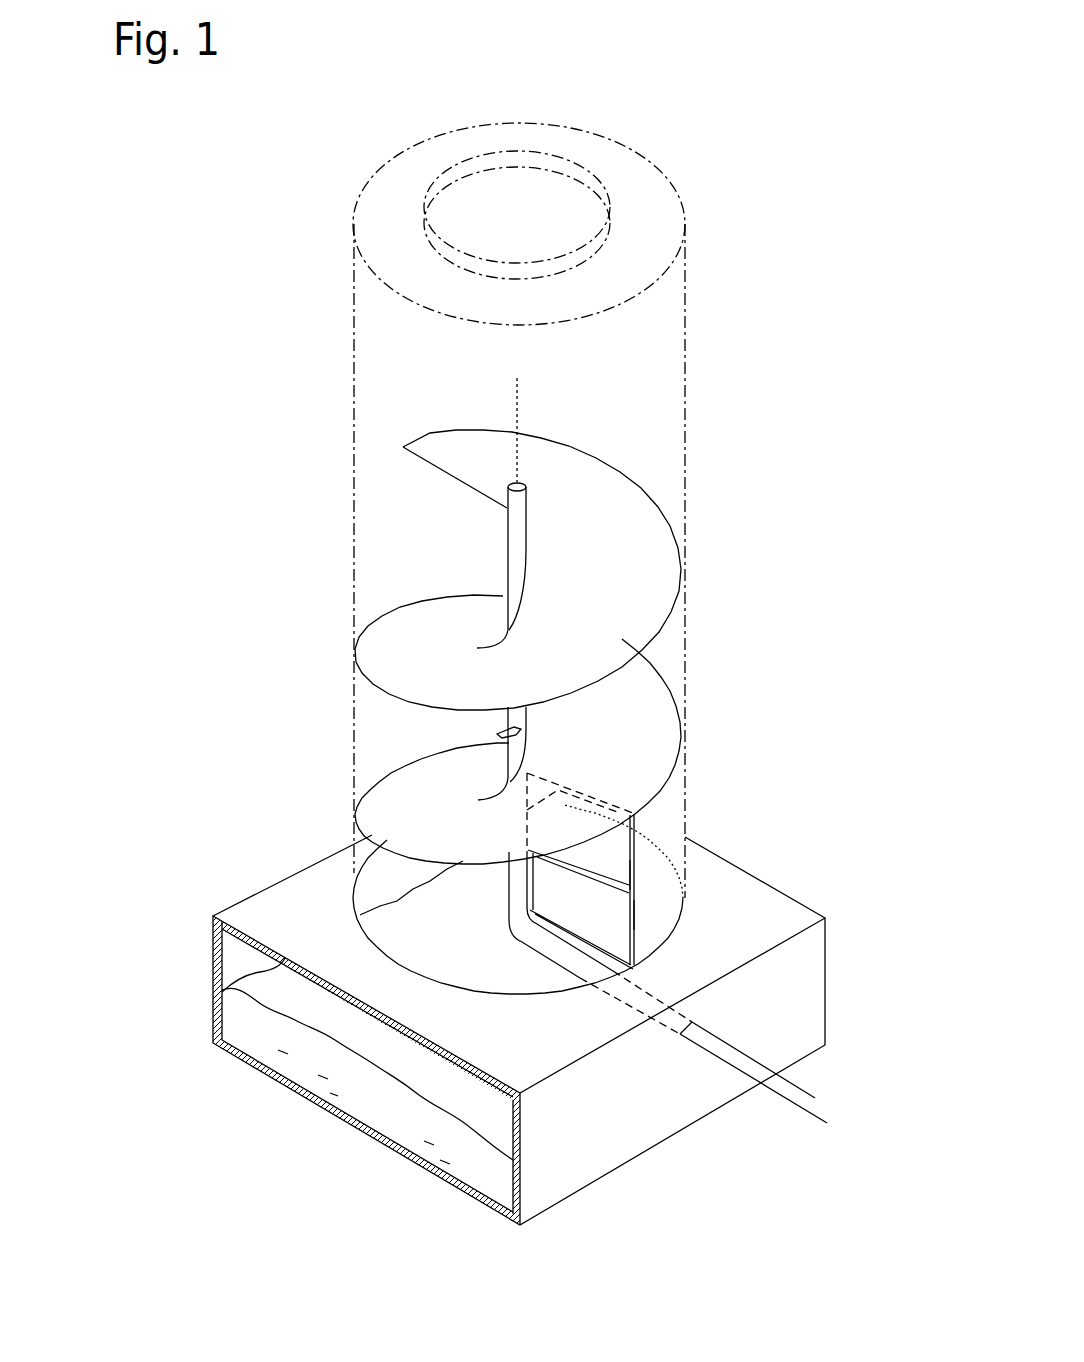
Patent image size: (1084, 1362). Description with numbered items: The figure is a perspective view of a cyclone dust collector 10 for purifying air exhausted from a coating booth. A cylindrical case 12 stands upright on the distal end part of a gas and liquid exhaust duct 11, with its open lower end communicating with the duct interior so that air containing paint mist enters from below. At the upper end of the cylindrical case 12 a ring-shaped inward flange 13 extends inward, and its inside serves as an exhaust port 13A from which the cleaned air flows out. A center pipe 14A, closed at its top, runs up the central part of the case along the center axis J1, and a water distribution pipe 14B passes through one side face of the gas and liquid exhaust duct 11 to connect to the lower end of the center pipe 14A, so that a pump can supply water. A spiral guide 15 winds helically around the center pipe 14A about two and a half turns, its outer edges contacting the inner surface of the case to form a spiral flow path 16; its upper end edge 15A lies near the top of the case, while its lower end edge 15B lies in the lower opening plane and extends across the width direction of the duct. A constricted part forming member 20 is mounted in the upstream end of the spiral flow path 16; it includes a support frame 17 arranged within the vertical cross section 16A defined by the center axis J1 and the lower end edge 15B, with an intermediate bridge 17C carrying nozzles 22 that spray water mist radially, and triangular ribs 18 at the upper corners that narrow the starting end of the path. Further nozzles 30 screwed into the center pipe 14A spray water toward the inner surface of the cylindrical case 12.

The cyclone dust collector 10 is at (742, 160).
The gas and liquid exhaust duct 11 is at (602, 1160).
The cylindrical case 12 is at (688, 290).
The inward flange 13 is at (643, 238).
The exhaust port 13A is at (606, 206).
The center axis J1 is at (517, 402).
The center pipe 14A is at (519, 525).
The water distribution pipe 14B is at (817, 1097).
The spiral guide 15 is at (645, 492).
The upper end edge 15A is at (453, 478).
The lower end edge 15B is at (583, 940).
The spiral flow path 16 is at (646, 689).
The vertical cross section 16A is at (648, 965).
The support frame 17 is at (636, 940).
The intermediate bridge 17C is at (633, 875).
The triangular ribs 18 is at (636, 814).
The constricted part forming member 20 is at (652, 919).
The nozzles 22 is at (572, 862).
The nozzles 30 is at (497, 731).